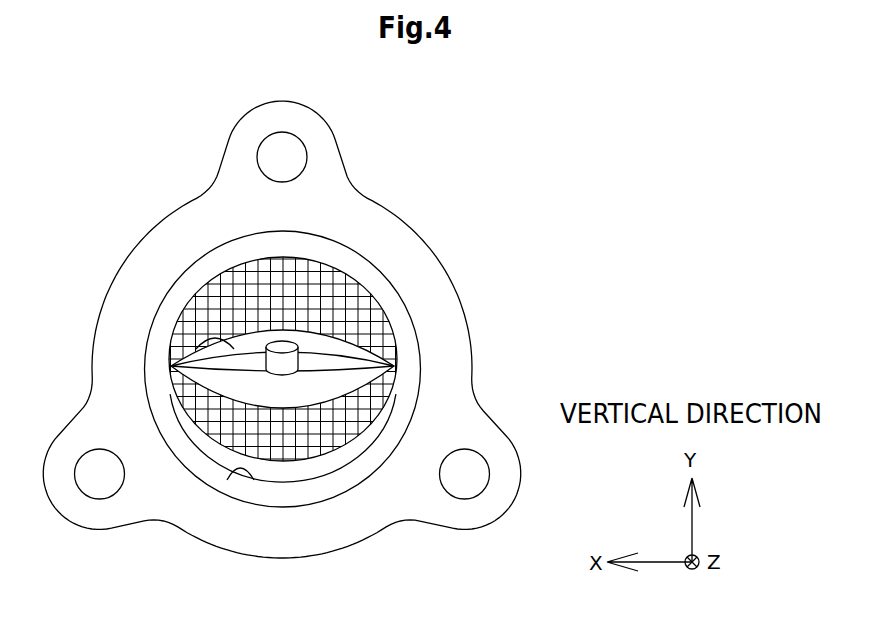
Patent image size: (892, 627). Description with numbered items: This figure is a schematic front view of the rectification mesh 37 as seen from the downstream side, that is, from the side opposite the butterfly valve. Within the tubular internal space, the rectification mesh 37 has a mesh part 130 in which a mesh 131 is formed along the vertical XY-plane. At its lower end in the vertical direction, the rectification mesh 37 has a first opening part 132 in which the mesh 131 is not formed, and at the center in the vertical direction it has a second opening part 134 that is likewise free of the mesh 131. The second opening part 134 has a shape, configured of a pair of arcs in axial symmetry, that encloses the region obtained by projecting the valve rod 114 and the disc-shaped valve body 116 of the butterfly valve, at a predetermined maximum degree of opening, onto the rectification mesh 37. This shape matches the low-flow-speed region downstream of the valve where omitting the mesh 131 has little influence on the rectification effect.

The rectification mesh 37 is at (433, 257).
The mesh part 130 is at (188, 297).
The mesh 131 is at (330, 288).
The first opening part 132 is at (228, 478).
The second opening part 134 is at (192, 352).
The valve rod 114 is at (391, 344).
The valve body 116 is at (282, 358).